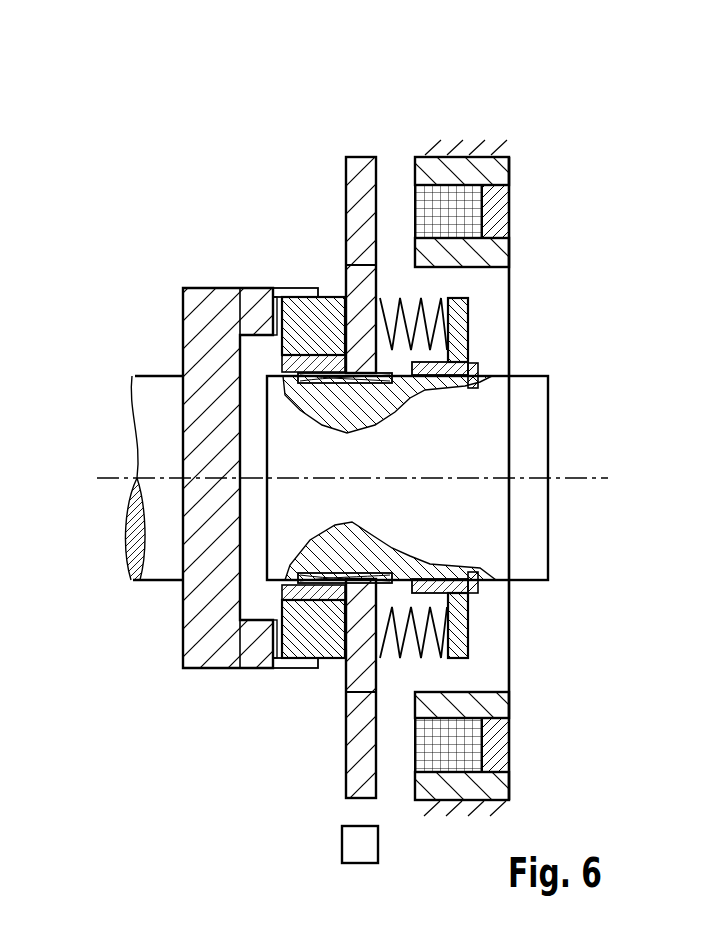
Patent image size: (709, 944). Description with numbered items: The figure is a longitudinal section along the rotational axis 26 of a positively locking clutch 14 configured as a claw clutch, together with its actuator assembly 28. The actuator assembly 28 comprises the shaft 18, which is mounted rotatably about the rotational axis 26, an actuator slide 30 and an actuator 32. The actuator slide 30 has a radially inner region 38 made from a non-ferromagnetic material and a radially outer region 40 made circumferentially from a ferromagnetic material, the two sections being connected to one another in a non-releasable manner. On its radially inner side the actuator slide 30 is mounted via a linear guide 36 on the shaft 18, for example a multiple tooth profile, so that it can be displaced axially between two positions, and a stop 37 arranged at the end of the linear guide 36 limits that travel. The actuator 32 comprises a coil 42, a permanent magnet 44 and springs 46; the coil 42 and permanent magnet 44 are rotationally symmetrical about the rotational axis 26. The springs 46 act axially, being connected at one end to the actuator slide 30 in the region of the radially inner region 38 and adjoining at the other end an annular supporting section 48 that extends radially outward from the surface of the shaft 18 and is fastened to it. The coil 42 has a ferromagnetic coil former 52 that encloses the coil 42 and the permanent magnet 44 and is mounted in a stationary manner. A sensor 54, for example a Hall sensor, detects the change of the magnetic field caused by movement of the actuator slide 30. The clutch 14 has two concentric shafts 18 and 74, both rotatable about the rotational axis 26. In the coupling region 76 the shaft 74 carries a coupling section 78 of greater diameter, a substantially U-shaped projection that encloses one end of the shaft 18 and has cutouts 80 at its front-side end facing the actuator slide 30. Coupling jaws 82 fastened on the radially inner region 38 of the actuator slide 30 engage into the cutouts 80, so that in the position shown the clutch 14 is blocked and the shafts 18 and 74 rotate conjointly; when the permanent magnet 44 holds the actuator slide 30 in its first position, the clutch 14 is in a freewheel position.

The positively locking clutch 14 is at (206, 104).
The shaft 18 is at (515, 508).
The rotational axis 26 is at (598, 476).
The actuator assembly 28 is at (508, 422).
The actuator slide 30 is at (327, 412).
The actuator 32 is at (472, 430).
The linear guide 36 is at (293, 325).
The stop 37 is at (475, 583).
The radially inner region 38 is at (350, 683).
The radially outer region 40 is at (358, 172).
The coil 42 is at (470, 738).
The permanent magnet 44 is at (500, 752).
The springs 46 is at (397, 298).
The supporting section 48 is at (462, 318).
The coil former 52 is at (500, 785).
The sensor 54 is at (342, 842).
The shaft 74 is at (160, 543).
The coupling region 76 is at (198, 503).
The coupling section 78 is at (197, 423).
The cutouts 80 is at (277, 293).
The coupling jaws 82 is at (285, 320).